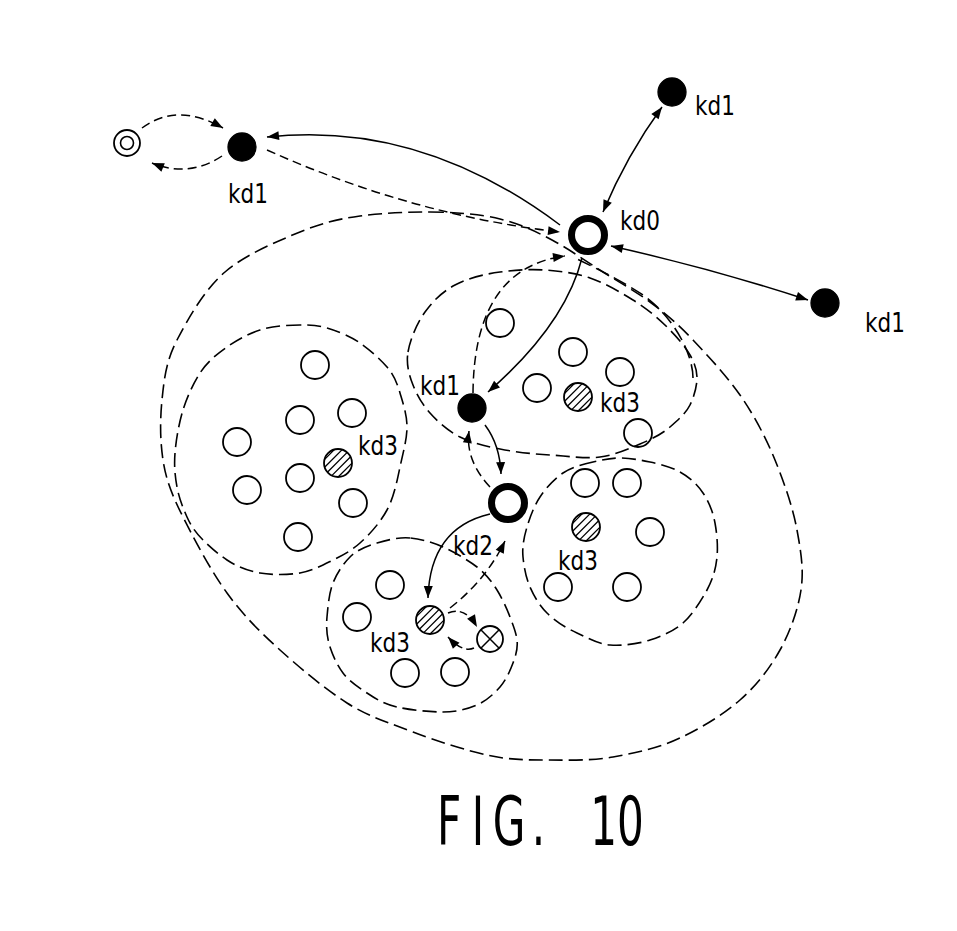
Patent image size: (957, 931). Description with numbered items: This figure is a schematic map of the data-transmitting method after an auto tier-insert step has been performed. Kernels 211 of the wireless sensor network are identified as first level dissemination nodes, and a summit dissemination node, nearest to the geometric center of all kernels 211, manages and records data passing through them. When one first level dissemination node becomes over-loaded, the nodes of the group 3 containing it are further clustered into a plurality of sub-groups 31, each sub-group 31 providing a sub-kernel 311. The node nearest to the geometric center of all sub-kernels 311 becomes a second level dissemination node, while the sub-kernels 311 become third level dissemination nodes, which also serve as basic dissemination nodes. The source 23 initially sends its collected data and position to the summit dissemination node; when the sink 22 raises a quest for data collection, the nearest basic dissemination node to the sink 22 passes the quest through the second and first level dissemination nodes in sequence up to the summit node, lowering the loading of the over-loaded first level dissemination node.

The group 3 is at (802, 567).
The sub-group 31 is at (693, 405).
The sub-kernel 311 is at (582, 386).
The kernel 211 is at (246, 134).
The sink 22 is at (505, 645).
The source 23 is at (122, 130).